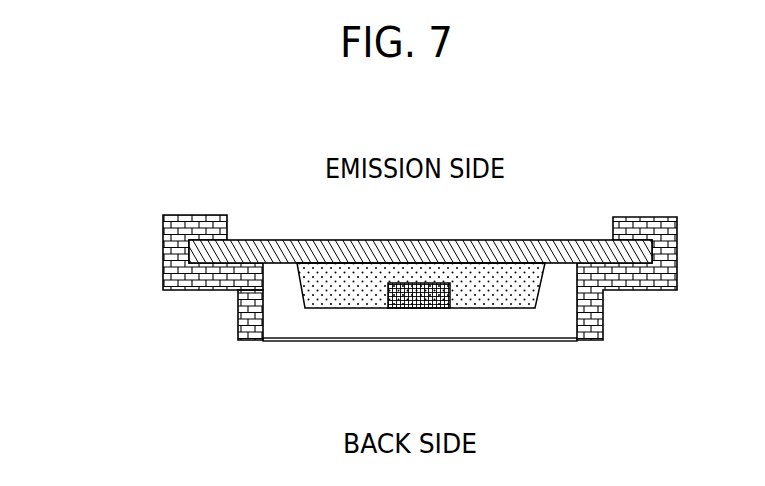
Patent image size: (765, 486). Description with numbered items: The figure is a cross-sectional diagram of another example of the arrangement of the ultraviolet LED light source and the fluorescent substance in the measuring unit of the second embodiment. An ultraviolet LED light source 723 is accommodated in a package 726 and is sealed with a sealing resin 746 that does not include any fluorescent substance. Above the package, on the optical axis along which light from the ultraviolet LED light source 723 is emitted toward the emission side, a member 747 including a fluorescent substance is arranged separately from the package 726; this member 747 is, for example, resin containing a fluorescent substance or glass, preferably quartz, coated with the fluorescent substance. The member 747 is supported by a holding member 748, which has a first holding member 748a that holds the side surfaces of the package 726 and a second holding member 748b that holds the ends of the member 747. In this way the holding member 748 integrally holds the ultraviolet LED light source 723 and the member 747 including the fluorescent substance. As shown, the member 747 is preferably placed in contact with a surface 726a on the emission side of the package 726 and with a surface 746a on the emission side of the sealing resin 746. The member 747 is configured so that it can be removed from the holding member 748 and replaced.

The member including a fluorescent substance 747 is at (243, 240).
The holding member 748 is at (372, 249).
The first holding member 748a is at (238, 318).
The second holding member 748b is at (163, 252).
The sealing resin 746 is at (486, 298).
The surface on the emission side of the sealing resin 746a is at (348, 264).
The ultraviolet LED light source 723 is at (408, 310).
The package 726 is at (562, 328).
The surface on the emission side of the package 726a is at (560, 267).